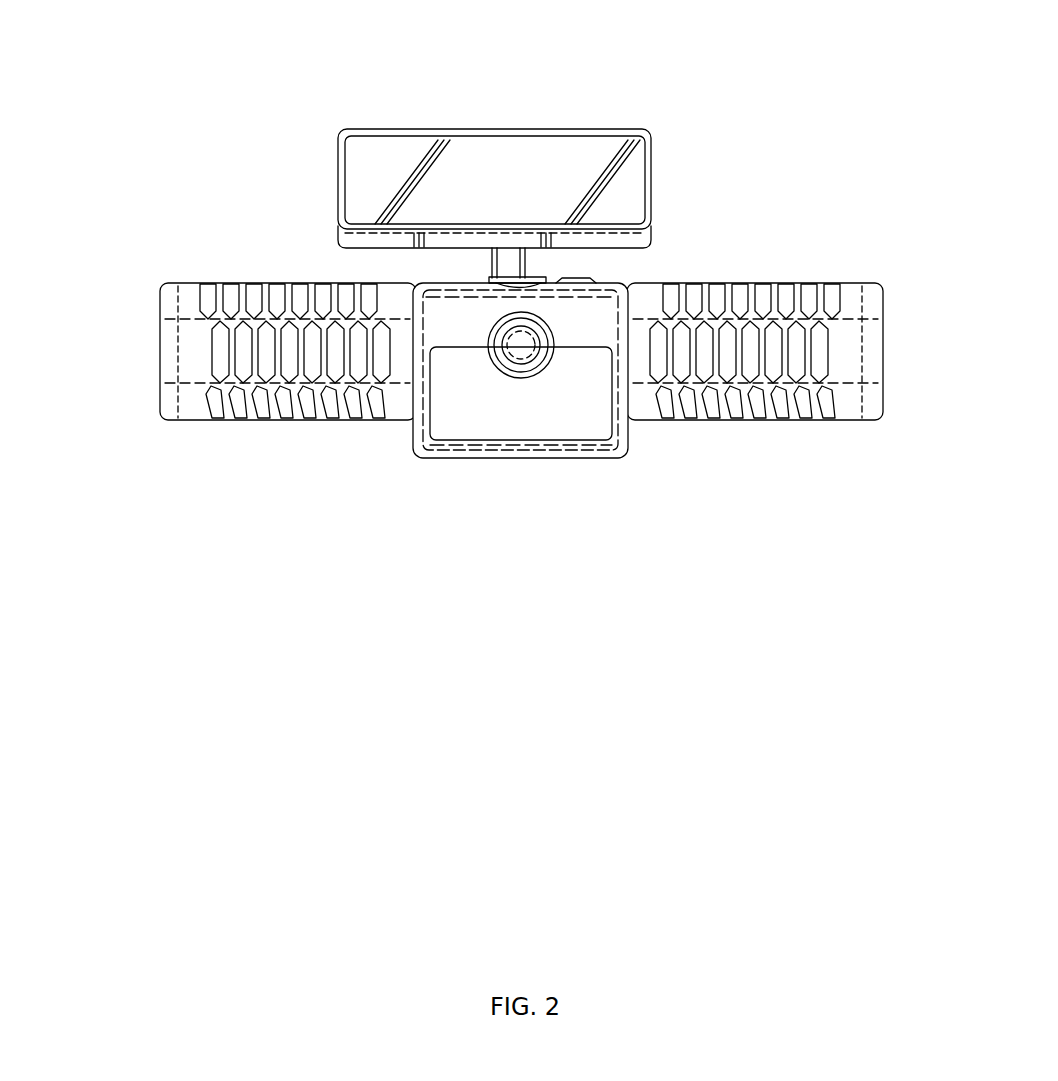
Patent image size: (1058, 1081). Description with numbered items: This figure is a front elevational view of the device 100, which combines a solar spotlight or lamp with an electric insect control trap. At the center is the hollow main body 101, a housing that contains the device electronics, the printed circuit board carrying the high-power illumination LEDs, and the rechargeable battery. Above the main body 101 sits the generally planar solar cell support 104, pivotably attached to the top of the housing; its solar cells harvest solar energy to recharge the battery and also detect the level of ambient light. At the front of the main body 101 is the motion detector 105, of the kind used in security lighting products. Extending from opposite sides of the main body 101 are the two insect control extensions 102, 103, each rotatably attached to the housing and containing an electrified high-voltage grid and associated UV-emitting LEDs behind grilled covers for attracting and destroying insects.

The device 100 is at (187, 166).
The main body 101 is at (582, 453).
The insect control extension 102 is at (861, 304).
The insect control extension 103 is at (165, 288).
The solar cell support 104 is at (338, 135).
The motion detector 105 is at (493, 372).